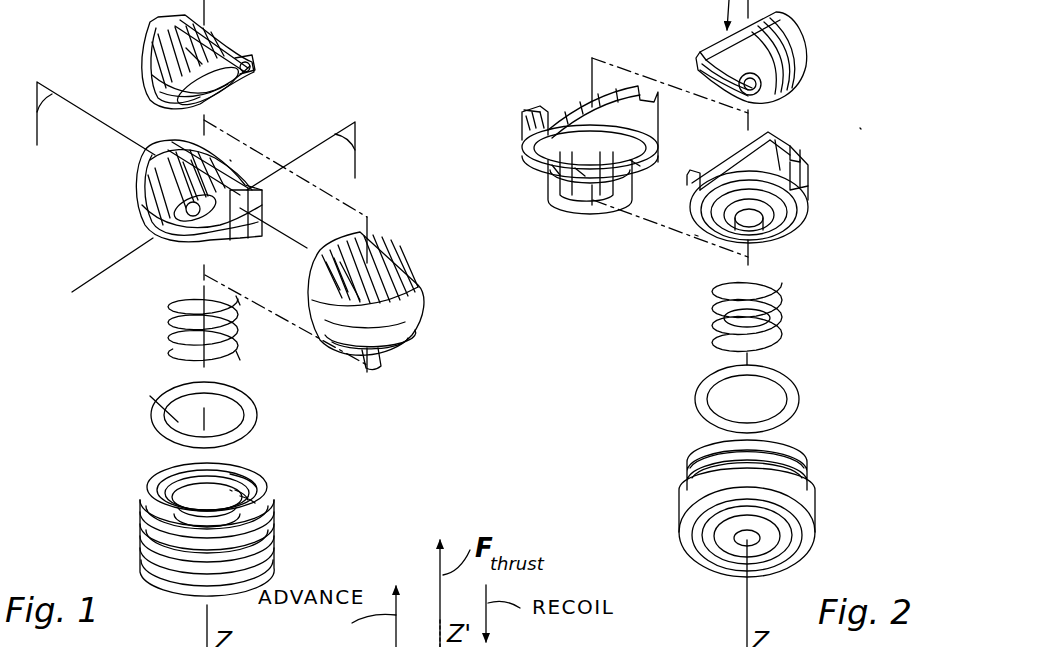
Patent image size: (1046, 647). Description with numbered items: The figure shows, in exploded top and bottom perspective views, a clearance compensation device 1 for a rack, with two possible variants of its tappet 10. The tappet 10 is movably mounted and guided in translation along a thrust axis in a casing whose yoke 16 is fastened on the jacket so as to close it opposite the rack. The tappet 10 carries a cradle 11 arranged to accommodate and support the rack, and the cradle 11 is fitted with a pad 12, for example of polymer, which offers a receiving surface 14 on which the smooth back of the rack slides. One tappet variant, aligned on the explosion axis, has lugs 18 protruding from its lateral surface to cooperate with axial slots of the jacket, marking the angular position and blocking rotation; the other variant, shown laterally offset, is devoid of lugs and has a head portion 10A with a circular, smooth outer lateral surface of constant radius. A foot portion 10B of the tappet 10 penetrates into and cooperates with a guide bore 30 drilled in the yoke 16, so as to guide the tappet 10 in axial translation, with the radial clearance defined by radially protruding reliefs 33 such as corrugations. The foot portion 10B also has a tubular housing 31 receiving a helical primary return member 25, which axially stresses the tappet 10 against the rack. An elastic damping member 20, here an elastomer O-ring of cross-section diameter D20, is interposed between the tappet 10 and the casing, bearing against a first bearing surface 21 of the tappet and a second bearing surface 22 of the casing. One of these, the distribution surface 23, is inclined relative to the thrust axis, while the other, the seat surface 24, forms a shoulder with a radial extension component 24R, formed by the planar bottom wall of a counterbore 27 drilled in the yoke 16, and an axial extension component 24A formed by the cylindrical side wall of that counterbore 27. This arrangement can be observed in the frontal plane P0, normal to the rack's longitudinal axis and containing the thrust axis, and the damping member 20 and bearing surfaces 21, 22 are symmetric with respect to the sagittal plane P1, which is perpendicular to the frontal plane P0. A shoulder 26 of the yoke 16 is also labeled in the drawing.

In FIG. 1, the clearance compensation device 1 is at (78, 238).
In FIG. 2, the clearance compensation device 1 is at (865, 127).
In FIG. 1, the tappet 10 is at (285, 251).
In FIG. 2, the tappet 10 is at (669, 176).
In FIG. 1, the head portion 10A is at (392, 310).
In FIG. 2, the head portion 10A is at (520, 125).
In FIG. 1, the foot portion 10B is at (405, 343).
In FIG. 2, the foot portion 10B is at (558, 172).
In FIG. 1, the cradle 11 is at (197, 167).
In FIG. 2, the cradle 11 is at (566, 116).
In FIG. 1, the pad 12 is at (155, 45).
In FIG. 2, the pad 12 is at (790, 80).
In FIG. 1, the receiving surface 14 is at (205, 55).
In FIG. 1, the yoke 16 is at (230, 513).
In FIG. 2, the yoke 16 is at (779, 510).
In FIG. 1, the lugs 18 is at (240, 232).
In FIG. 2, the lugs 18 is at (790, 172).
In FIG. 1, the elastic damping member 20 is at (230, 400).
In FIG. 2, the elastic damping member 20 is at (795, 392).
In FIG. 2, the first bearing surface 21 is at (790, 215).
In FIG. 1, the second bearing surface 22 is at (165, 487).
In FIG. 2, the distribution surface 23 is at (640, 168).
In FIG. 1, the seat surface 24 is at (350, 452).
In FIG. 1, the axial extension component 24A is at (243, 488).
In FIG. 1, the radial extension component 24R is at (249, 500).
In FIG. 1, the primary return member 25 is at (168, 323).
In FIG. 2, the primary return member 25 is at (775, 300).
In FIG. 1, the shoulder 26 is at (257, 502).
In FIG. 1, the counterbore 27 is at (156, 502).
In FIG. 1, the guide bore 30 is at (205, 510).
In FIG. 2, the tubular housing 31 is at (790, 545).
In FIG. 1, the radially protruding reliefs 33 is at (373, 345).
In FIG. 2, the radially protruding reliefs 33 is at (578, 175).
In FIG. 1, the diameter of the cross-section of the damping member D20 is at (180, 424).
In FIG. 1, the frontal plane P0 is at (47, 112).
In FIG. 1, the sagittal plane P1 is at (340, 150).